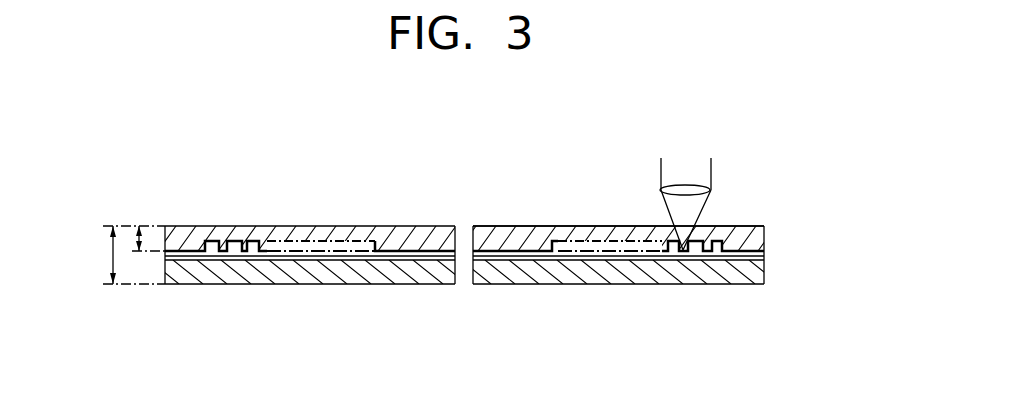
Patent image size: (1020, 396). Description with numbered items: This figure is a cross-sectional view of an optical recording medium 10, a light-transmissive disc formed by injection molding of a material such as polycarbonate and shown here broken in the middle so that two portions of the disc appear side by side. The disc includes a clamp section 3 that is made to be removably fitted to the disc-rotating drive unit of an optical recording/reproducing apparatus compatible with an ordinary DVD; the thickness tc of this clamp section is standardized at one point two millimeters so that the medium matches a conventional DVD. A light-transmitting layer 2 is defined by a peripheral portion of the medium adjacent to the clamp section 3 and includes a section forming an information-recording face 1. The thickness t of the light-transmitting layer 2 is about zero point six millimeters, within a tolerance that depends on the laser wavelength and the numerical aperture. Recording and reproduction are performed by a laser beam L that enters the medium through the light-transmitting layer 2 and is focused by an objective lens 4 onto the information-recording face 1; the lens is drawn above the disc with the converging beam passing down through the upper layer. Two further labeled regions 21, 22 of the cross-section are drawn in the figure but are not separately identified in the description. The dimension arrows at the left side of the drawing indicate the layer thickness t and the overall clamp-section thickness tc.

The optical recording medium 10 is at (316, 178).
The information-recording face 1 is at (700, 258).
The light-transmitting layer 2 is at (606, 235).
The clamp section 3 is at (495, 235).
The pit pattern 21 is at (541, 240).
The reflective layer 22 is at (552, 270).
The objective lens 4 is at (692, 186).
The laser beam L is at (713, 167).
The thickness of light-transmitting layer t is at (138, 227).
The thickness of clamp section tc is at (123, 255).